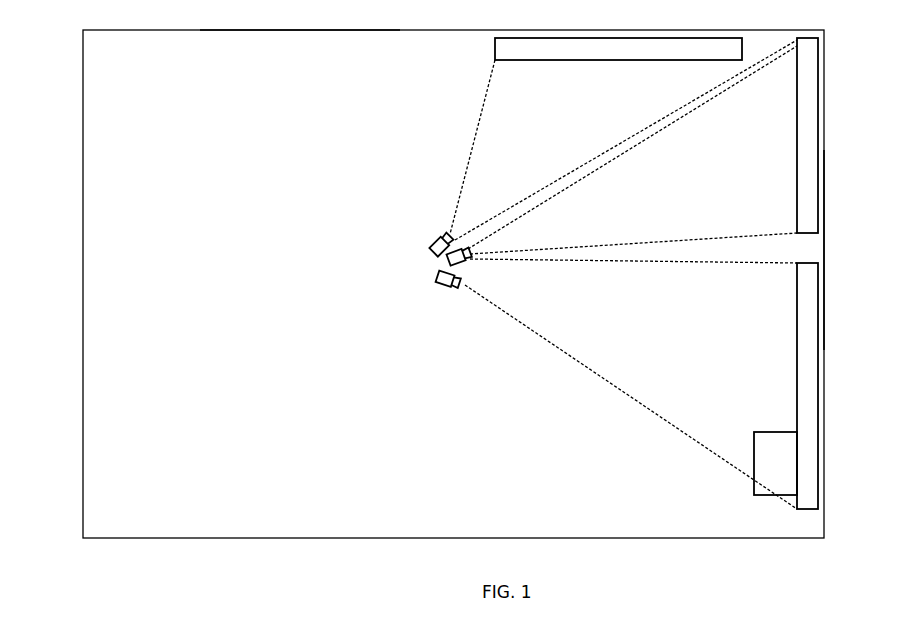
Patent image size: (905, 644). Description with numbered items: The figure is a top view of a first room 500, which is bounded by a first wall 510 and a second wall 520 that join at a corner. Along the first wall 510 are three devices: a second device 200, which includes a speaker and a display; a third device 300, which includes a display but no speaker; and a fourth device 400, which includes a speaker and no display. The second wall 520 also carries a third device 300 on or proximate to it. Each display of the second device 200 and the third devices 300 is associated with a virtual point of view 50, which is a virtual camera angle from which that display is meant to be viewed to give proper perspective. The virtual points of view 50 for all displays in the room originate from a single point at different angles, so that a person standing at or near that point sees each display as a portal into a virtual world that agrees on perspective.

The virtual point of view 50 is at (432, 244).
The second device 200 is at (810, 90).
The third device 300 is at (553, 48).
The fourth device 400 is at (766, 483).
The first room 500 is at (97, 271).
The first wall 510 is at (825, 243).
The second wall 520 is at (293, 30).